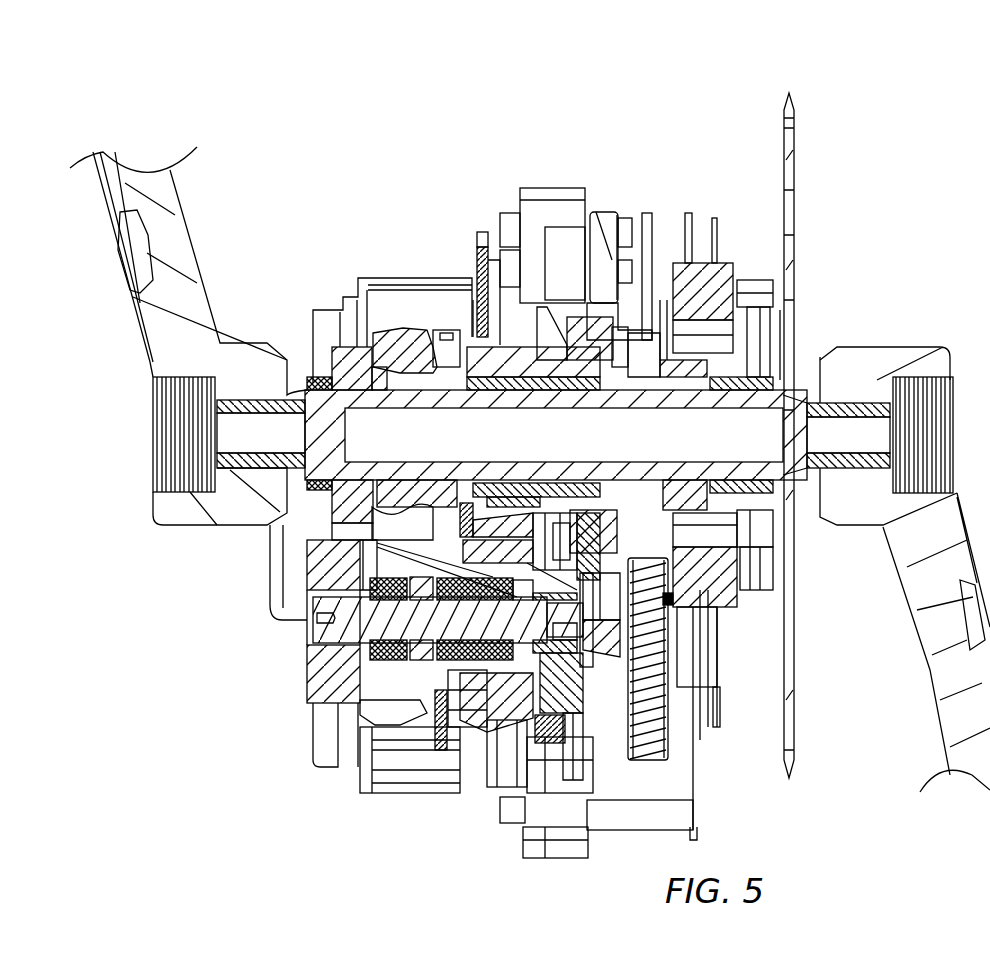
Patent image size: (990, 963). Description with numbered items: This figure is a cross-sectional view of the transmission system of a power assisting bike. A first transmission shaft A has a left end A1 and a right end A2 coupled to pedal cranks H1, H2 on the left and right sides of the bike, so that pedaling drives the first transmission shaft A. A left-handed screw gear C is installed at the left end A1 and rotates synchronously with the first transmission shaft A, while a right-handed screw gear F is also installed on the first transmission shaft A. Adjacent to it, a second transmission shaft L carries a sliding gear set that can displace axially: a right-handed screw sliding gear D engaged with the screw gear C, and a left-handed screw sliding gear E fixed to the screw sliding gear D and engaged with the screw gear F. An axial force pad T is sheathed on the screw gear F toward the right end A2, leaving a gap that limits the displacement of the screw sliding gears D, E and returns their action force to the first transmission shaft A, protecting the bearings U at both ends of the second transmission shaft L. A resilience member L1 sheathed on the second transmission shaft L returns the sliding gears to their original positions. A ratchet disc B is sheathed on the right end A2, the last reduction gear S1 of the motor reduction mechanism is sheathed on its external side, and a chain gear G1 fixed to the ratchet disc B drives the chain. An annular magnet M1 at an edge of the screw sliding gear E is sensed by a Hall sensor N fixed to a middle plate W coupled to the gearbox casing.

The pedal crank H1 is at (163, 245).
The pedal crank H2 is at (960, 715).
The first transmission shaft A is at (808, 397).
The left end A1 is at (260, 437).
The right end A2 is at (850, 435).
The chain gear G1 is at (796, 135).
The left-handed screw gear C is at (400, 343).
The right-handed screw gear F is at (518, 348).
The axial force pad T is at (543, 333).
The last reduction gear S1 is at (608, 237).
The ratchet disc B is at (653, 363).
The second transmission shaft L is at (397, 622).
The resilience member L1 is at (307, 677).
The right-handed screw sliding gear D is at (393, 703).
The Hall sensor N is at (415, 735).
The annular magnet M1 is at (477, 710).
The left-handed screw sliding gear E is at (508, 718).
The middle plate W is at (575, 740).
The bearings U is at (567, 655).